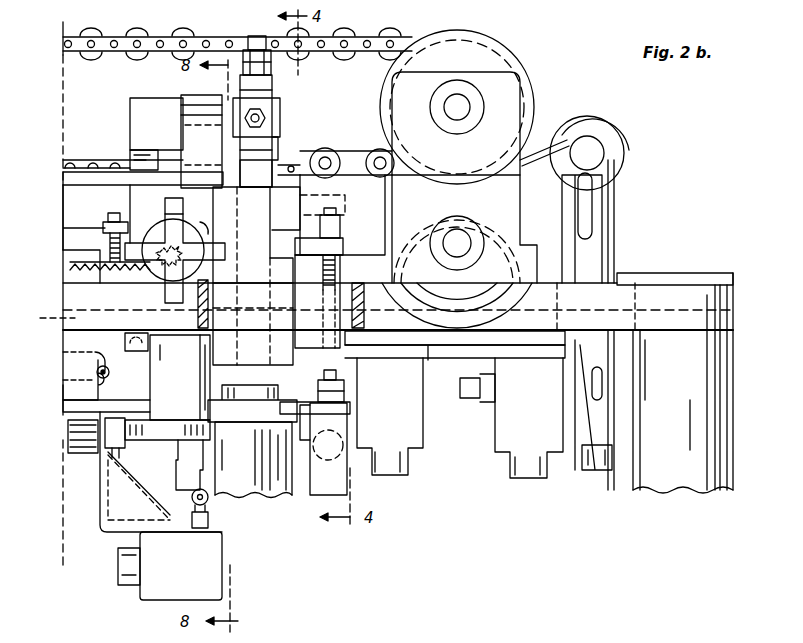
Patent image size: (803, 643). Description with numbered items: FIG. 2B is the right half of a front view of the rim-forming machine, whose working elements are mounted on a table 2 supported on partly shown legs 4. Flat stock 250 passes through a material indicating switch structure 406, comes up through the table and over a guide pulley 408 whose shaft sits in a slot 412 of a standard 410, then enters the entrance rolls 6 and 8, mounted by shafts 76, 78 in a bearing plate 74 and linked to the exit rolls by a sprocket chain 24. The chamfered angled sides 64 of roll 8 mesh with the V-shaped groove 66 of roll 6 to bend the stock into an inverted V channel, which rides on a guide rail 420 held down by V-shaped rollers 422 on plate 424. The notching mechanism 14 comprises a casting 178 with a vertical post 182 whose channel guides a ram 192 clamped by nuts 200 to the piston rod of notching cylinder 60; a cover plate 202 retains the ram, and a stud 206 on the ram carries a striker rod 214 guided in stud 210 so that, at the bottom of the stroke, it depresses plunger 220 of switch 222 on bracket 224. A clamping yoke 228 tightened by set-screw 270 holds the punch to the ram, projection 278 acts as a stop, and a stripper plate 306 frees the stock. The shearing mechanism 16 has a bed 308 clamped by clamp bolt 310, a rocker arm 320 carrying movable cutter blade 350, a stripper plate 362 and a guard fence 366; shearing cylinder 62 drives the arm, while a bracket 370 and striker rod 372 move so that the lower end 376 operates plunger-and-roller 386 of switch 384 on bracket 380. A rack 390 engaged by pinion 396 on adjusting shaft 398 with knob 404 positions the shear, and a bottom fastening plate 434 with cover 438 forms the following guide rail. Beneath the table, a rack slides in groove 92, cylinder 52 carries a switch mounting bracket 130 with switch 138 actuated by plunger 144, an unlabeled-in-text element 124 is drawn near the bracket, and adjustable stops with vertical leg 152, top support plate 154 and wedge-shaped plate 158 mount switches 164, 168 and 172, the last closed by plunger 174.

The table 2 is at (715, 298).
The legs 4 is at (720, 455).
The entrance roll 6 is at (464, 99).
The entrance roll 8 is at (478, 295).
The notching mechanism 14 is at (288, 111).
The shearing mechanism 16 is at (154, 122).
The sprocket chain 24 is at (123, 38).
The cylinder 52 is at (66, 440).
The notching cylinder 60 is at (262, 495).
The shearing cylinder 62 is at (180, 383).
The angled sides 64 is at (497, 288).
The V-shaped groove 66 is at (500, 40).
The bearing plate 74 is at (514, 98).
The shaft 76 is at (460, 107).
The shaft 78 is at (457, 240).
The groove 92 is at (46, 318).
The stop block 124 is at (178, 480).
The switch mounting bracket 130 is at (112, 508).
The switch 138 is at (150, 590).
The plunger 144 is at (210, 505).
The vertical leg 152 is at (455, 381).
The top support plate 154 is at (475, 334).
The wedge-shaped plate 158 is at (716, 275).
The switch 164 is at (305, 425).
The switch 168 is at (420, 436).
The switch 172 is at (497, 437).
The plunger 174 is at (470, 398).
The casting 178 is at (266, 346).
The vertical post 182 is at (266, 219).
The ram 192 is at (266, 180).
The nuts 200 is at (270, 66).
The cover plate 202 is at (278, 292).
The stud 206 is at (340, 238).
The stud 210 is at (308, 316).
The striker rod 214 is at (322, 268).
The plunger 220 is at (338, 365).
The switch 222 is at (320, 470).
The bracket 224 is at (297, 402).
The clamping yoke 228 is at (280, 125).
The flat stock 250 is at (538, 150).
The set-screw 270 is at (270, 114).
The projection 278 is at (276, 150).
The stripper plate 306 is at (290, 168).
The bed 308 is at (133, 200).
The clamp bolt 310 is at (148, 343).
The rocker arm 320 is at (130, 110).
The movable cutter blade 350 is at (218, 150).
The stripper plate 362 is at (207, 236).
The guard fence 366 is at (200, 105).
The bracket 370 is at (103, 226).
The striker rod 372 is at (108, 245).
The lower end of striker rod 376 is at (118, 448).
The bracket 380 is at (63, 408).
The switch 384 is at (63, 392).
The plunger-and-roller 386 is at (63, 356).
The rack 390 is at (80, 270).
The pinion 396 is at (190, 246).
The adjusting shaft 398 is at (150, 236).
The knob 404 is at (183, 212).
The material indicating switch structure 406 is at (590, 430).
The guide pulley 408 is at (616, 138).
The standard 410 is at (605, 224).
The slot 412 is at (593, 200).
The guide rail 420 is at (362, 205).
The V-shaped rollers 422 is at (332, 150).
The plate 424 is at (360, 158).
The bottom fastening plate 434 is at (66, 180).
The cover 438 is at (100, 165).